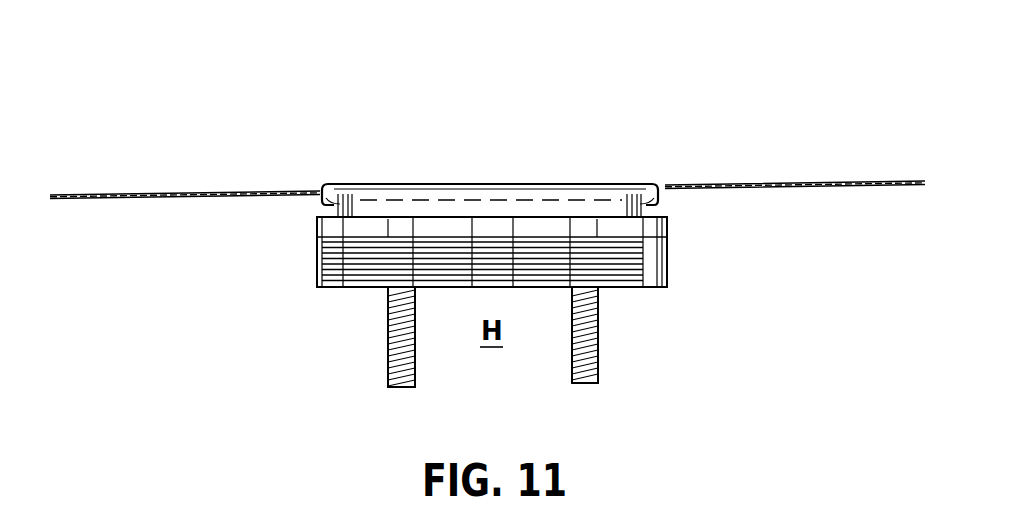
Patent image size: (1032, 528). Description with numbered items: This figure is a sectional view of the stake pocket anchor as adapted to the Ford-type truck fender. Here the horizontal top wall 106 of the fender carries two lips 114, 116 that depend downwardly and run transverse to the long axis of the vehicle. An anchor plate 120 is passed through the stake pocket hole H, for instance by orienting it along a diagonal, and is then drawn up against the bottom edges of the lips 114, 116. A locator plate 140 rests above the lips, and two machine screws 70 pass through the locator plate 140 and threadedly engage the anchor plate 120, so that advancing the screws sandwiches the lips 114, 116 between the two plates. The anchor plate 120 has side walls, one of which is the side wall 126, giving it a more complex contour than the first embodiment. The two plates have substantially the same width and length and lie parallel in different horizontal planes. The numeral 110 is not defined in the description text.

The machine screws 70 is at (388, 348).
The horizontal top wall 106 is at (780, 185).
The assembly 110 is at (724, 113).
The lip 114 is at (333, 205).
The lip 116 is at (652, 204).
The anchor plate 120 is at (317, 294).
The side wall 126 is at (537, 225).
The locator plate 140 is at (425, 183).